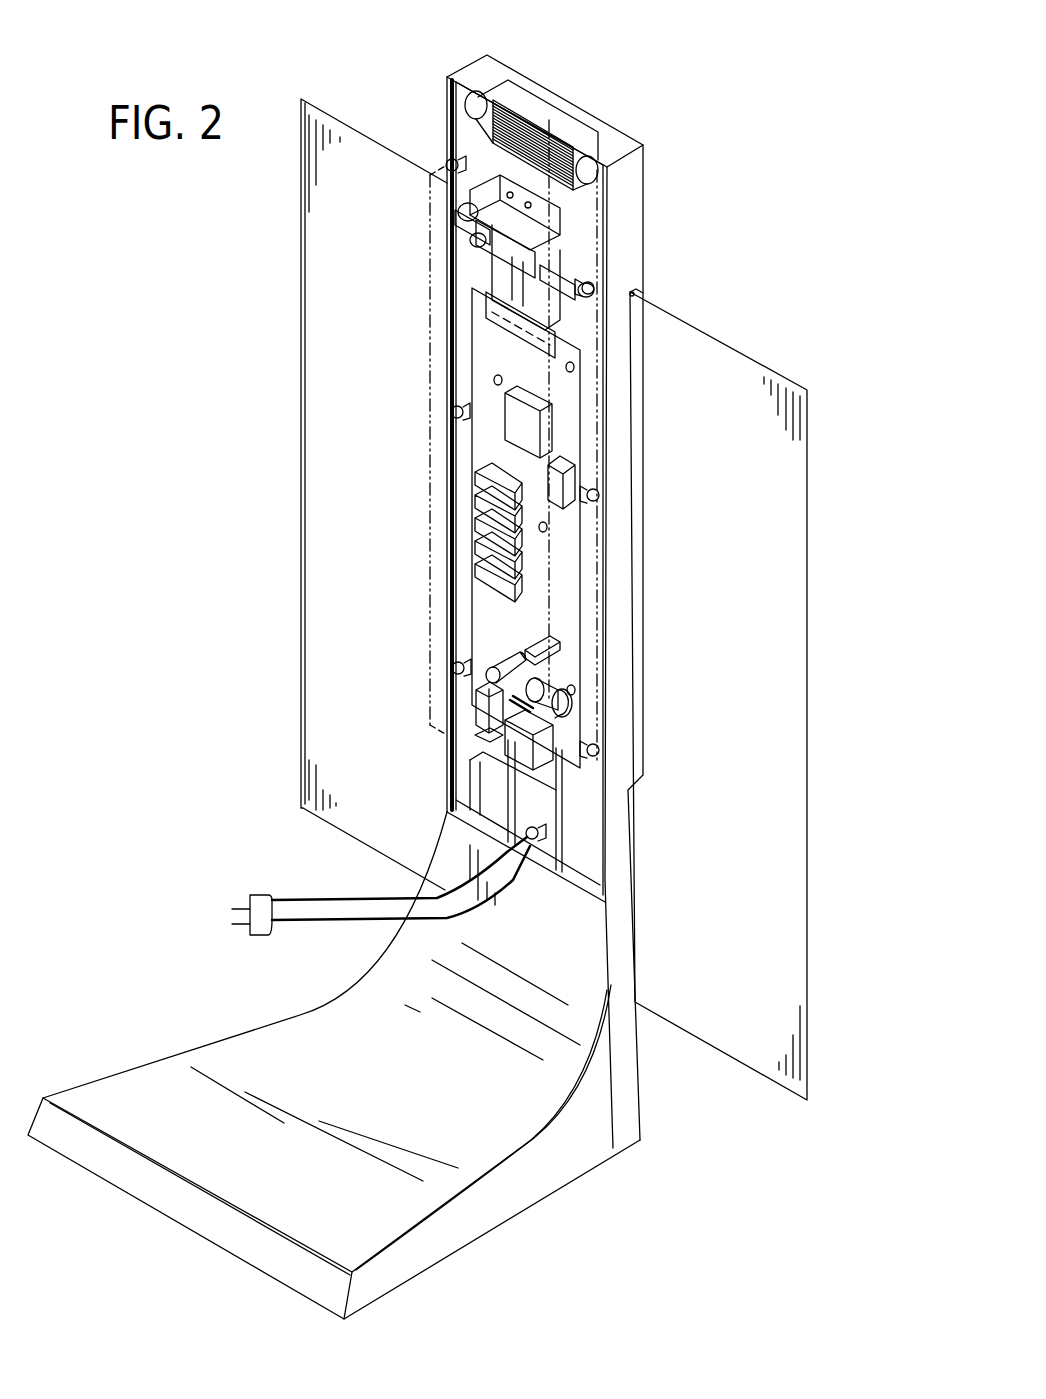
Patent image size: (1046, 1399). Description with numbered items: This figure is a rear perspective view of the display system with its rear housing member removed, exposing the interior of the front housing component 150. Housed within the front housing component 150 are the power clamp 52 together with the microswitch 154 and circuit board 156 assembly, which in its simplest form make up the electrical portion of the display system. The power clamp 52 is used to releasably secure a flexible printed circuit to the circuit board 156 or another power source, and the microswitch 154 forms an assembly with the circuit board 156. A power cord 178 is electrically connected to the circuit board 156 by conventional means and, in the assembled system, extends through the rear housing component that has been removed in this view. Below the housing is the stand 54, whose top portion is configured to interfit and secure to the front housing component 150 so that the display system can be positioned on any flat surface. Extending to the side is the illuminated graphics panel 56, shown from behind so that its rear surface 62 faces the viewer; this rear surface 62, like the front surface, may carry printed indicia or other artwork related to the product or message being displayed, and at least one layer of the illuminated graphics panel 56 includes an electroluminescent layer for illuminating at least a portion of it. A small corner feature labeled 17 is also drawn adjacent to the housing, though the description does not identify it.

The display frame tab 17 is at (633, 291).
The power clamp 52 is at (540, 128).
The stand 54 is at (516, 1191).
The illuminated graphics panel 56 is at (762, 486).
The rear surface 62 is at (333, 251).
The front housing component 150 is at (628, 200).
The microswitch 154 is at (452, 162).
The circuit board 156 is at (568, 387).
The power cord 178 is at (307, 910).